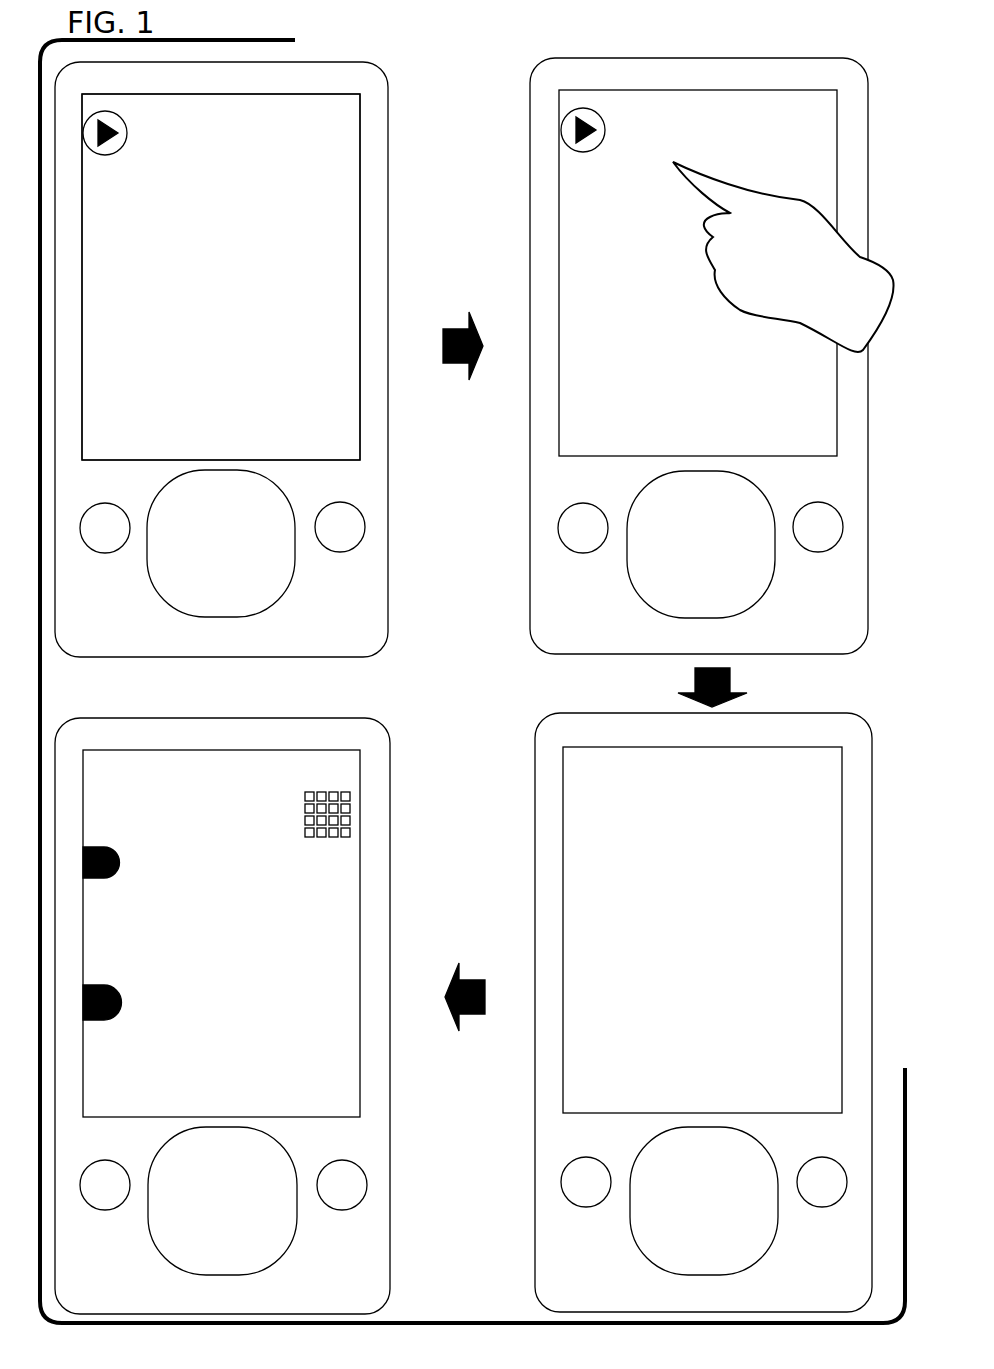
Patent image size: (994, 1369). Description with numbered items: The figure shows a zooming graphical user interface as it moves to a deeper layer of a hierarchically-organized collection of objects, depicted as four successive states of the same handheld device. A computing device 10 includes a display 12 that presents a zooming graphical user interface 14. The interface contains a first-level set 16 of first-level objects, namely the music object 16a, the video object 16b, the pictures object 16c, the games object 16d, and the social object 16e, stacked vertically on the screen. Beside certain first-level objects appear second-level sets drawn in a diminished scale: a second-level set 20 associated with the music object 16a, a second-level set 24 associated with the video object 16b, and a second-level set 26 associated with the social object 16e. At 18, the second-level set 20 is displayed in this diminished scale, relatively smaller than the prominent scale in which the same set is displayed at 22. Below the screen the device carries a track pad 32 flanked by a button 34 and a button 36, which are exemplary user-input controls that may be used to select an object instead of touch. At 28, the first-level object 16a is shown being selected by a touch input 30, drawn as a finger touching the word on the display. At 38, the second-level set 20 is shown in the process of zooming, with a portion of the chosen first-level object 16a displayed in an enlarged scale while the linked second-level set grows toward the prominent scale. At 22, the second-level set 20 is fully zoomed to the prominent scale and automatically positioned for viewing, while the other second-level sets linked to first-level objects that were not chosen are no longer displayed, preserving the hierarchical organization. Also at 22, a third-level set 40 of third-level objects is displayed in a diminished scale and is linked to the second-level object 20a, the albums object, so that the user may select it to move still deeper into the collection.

The computing device 10 is at (405, 129).
The display 12 is at (280, 470).
The zooming graphical user interface 14 is at (280, 118).
The first-level set 16 is at (405, 515).
The music object 16a is at (154, 192).
The video object 16b is at (154, 256).
The pictures object 16c is at (154, 319).
The games object 16d is at (154, 384).
The social object 16e is at (154, 446).
The initial view 18 is at (418, 72).
The second-level set 20 is at (478, 611).
The second-level object 20a is at (212, 835).
The fully zoomed view 22 is at (255, 701).
The second-level set 24 is at (305, 212).
The second-level set 26 is at (277, 393).
The selection view 28 is at (866, 65).
The touch input 30 is at (696, 194).
The track pad 32 is at (197, 617).
The button 34 is at (128, 553).
The button 36 is at (372, 546).
The zooming view 38 is at (788, 703).
The third-level set 40 is at (309, 789).